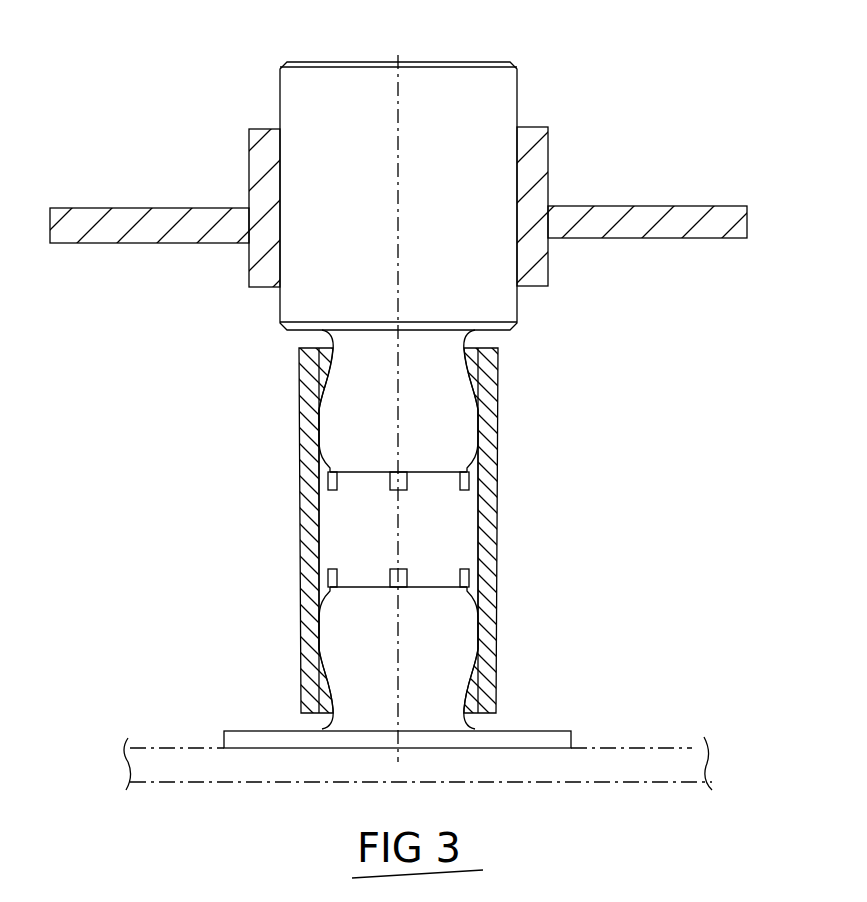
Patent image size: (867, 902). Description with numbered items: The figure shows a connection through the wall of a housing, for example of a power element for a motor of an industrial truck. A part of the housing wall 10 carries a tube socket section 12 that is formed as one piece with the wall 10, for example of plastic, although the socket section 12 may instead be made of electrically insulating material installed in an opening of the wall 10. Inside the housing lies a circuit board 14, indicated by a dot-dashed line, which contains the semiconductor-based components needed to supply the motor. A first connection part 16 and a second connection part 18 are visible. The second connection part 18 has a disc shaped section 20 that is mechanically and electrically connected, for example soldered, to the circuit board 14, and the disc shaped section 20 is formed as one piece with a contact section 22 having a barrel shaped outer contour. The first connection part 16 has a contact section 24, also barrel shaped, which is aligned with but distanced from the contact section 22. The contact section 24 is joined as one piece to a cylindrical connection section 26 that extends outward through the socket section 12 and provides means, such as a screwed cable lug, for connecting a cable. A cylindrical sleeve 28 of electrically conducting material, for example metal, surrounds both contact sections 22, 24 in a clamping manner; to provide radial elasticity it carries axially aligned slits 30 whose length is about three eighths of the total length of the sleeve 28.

The wall 10 is at (602, 218).
The tube socket section 12 is at (252, 146).
The circuit board 14 is at (690, 752).
The first connection part 16 is at (483, 115).
The second connection part 18 is at (418, 711).
The disc shaped section 20 is at (242, 737).
The contact section 22 is at (455, 648).
The contact section 24 is at (448, 410).
The cylindrical connection section 26 is at (441, 80).
The cylindrical sleeve 28 is at (497, 478).
The slits 30 is at (402, 490).